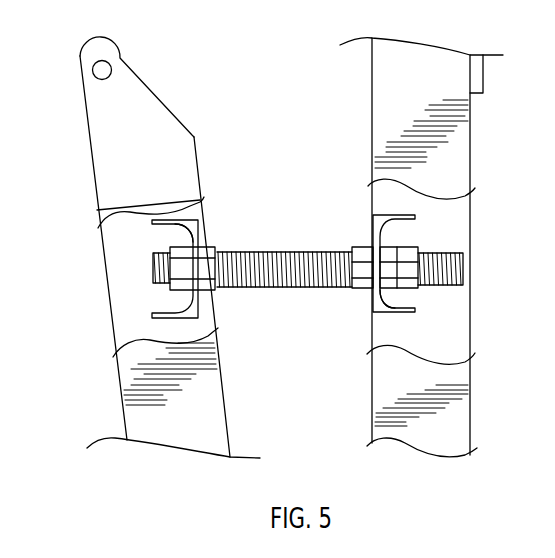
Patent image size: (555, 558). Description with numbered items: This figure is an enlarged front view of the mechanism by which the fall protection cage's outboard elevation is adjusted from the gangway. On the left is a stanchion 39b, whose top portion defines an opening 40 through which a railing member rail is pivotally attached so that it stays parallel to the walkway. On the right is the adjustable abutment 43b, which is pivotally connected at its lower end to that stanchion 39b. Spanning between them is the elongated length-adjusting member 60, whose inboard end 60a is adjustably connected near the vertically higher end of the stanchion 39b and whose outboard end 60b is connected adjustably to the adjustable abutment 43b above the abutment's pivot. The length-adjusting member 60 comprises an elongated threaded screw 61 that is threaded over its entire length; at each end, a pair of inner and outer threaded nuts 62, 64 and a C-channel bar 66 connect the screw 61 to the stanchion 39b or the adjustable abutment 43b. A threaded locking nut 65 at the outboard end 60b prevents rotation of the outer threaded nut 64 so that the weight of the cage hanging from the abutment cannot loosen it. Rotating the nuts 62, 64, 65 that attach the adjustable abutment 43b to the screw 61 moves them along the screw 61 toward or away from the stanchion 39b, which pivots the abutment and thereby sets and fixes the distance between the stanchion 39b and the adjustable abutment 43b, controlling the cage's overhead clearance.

The stanchion 39b is at (107, 150).
The opening 40 is at (111, 68).
The adjustable abutment 43b is at (385, 88).
The elongated length-adjusting member 60 is at (260, 203).
The inboard end 60a is at (150, 268).
The outboard end 60b is at (465, 262).
The elongated threaded screw 61 is at (268, 250).
The inner threaded nut 62 is at (205, 248).
The outer threaded nut 64 is at (177, 237).
The threaded locking nut 65 is at (408, 245).
The C-channel bar 66 is at (200, 303).